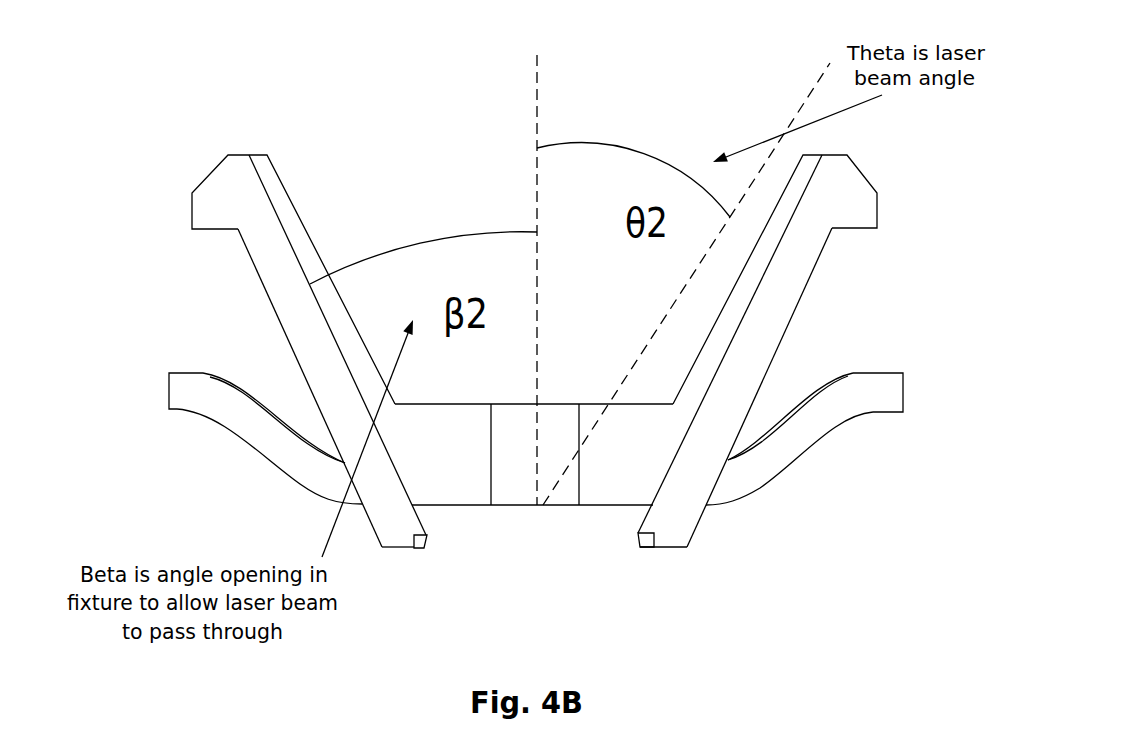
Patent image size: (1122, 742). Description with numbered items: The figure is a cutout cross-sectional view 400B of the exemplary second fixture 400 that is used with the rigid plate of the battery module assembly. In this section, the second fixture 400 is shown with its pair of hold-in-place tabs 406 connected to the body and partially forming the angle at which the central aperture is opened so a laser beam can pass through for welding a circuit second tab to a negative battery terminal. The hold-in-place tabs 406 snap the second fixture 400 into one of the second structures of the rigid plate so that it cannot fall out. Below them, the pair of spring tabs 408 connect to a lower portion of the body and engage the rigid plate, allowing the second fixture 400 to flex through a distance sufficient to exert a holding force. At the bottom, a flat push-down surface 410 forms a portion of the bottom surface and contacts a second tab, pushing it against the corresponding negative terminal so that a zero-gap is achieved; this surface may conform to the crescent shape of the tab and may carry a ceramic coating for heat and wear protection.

The second fixture 400 is at (486, 119).
The cross-sectional view 400B is at (657, 78).
The hold-in-place tabs 406 is at (226, 153).
The spring tabs 408 is at (177, 410).
The flat push-down surface 410 is at (400, 548).